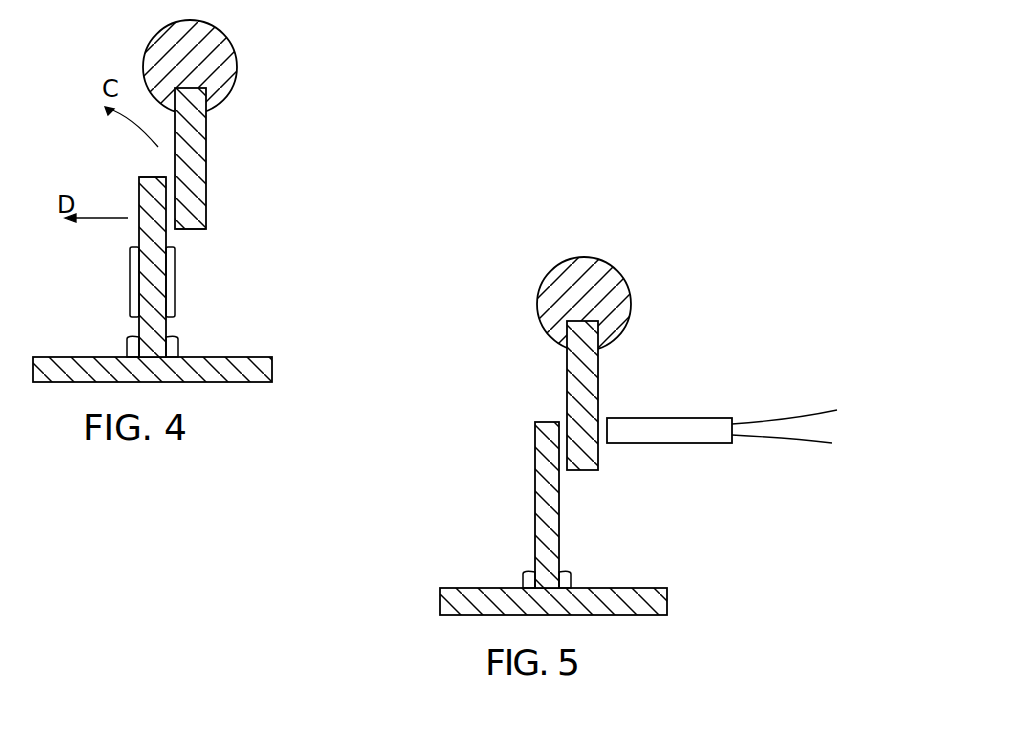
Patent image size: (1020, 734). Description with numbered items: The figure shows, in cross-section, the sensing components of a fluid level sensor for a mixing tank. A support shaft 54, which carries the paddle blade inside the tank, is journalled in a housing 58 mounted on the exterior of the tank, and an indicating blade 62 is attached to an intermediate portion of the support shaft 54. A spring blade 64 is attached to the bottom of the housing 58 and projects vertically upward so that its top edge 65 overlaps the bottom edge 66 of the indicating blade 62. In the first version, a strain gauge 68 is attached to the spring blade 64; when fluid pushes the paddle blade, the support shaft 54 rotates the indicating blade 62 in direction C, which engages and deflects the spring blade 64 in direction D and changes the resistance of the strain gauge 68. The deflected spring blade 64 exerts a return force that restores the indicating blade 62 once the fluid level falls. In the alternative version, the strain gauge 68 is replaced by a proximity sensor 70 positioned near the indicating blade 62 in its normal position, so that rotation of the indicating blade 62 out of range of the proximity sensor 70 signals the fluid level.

In FIG. 4, the support shaft 54 is at (210, 61).
In FIG. 5, the support shaft 54 is at (612, 287).
In FIG. 4, the housing 58 is at (243, 365).
In FIG. 5, the housing 58 is at (623, 597).
In FIG. 4, the indicating blade 62 is at (190, 165).
In FIG. 5, the indicating blade 62 is at (582, 397).
In FIG. 4, the spring blade 64 is at (153, 207).
In FIG. 5, the spring blade 64 is at (547, 520).
In FIG. 4, the top edge 65 is at (153, 177).
In FIG. 4, the bottom edge 66 is at (188, 232).
In FIG. 4, the strain gauge 68 is at (133, 268).
In FIG. 5, the proximity sensor 70 is at (687, 427).